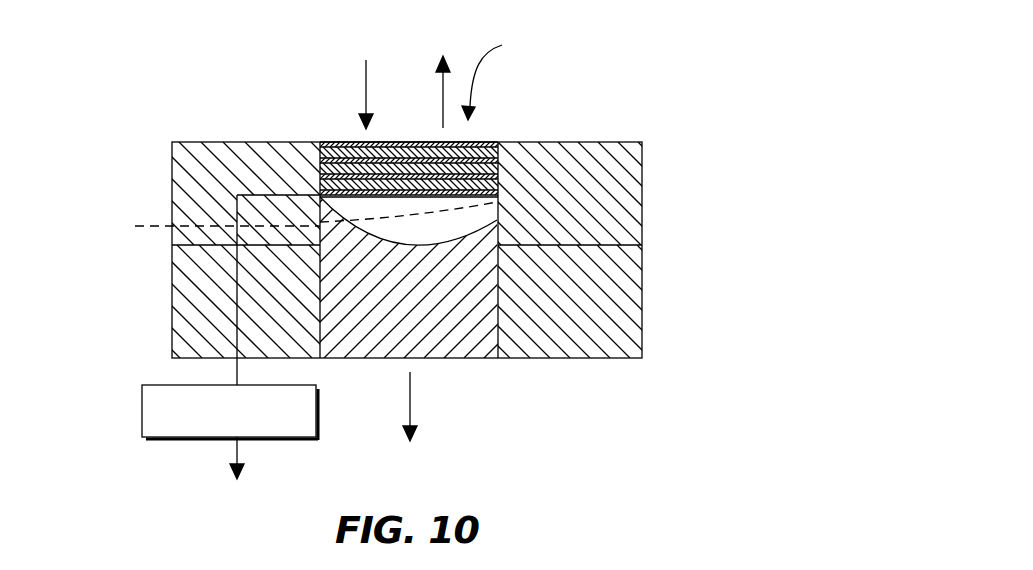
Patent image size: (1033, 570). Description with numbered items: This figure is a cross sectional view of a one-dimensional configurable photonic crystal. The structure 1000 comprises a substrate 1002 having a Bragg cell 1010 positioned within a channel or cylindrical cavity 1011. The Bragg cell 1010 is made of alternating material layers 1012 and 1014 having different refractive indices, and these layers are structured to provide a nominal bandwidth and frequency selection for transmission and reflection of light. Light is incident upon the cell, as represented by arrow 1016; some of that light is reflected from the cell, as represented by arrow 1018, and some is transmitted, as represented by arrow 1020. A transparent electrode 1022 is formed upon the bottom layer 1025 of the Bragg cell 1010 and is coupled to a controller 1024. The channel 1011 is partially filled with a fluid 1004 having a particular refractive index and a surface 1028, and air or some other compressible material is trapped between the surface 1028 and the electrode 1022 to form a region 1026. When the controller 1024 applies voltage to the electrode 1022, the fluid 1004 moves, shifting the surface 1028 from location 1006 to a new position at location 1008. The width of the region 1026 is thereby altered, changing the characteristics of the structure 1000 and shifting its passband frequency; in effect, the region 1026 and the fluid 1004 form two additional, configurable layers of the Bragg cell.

The structure 1000 is at (650, 110).
The substrate 1002 is at (620, 345).
The fluid 1004 is at (470, 352).
The location 1006 is at (465, 232).
The location 1008 is at (197, 226).
The Bragg cell 1010 is at (510, 76).
The channel 1011 is at (500, 317).
The material layer 1012 is at (487, 142).
The material layer 1014 is at (415, 145).
The arrow 1016 is at (360, 82).
The arrow 1018 is at (447, 90).
The arrow 1020 is at (412, 395).
The transparent electrode 1022 is at (497, 193).
The controller 1024 is at (272, 438).
The bottom layer 1025 is at (318, 186).
The region 1026 is at (427, 204).
The surface 1028 is at (368, 240).